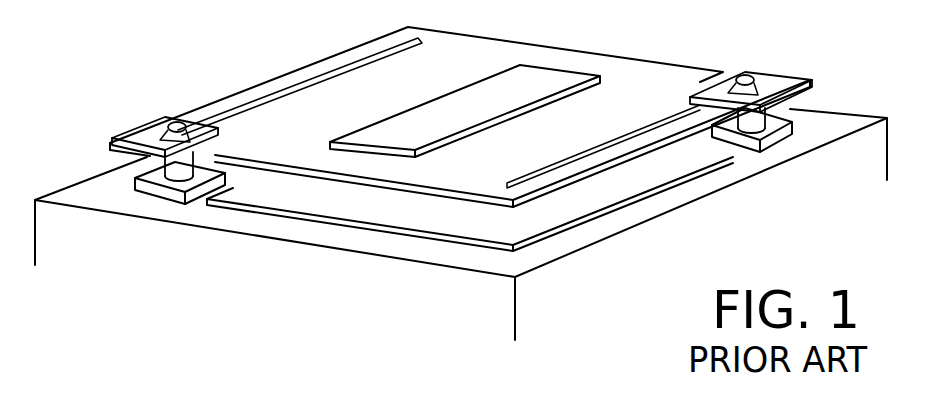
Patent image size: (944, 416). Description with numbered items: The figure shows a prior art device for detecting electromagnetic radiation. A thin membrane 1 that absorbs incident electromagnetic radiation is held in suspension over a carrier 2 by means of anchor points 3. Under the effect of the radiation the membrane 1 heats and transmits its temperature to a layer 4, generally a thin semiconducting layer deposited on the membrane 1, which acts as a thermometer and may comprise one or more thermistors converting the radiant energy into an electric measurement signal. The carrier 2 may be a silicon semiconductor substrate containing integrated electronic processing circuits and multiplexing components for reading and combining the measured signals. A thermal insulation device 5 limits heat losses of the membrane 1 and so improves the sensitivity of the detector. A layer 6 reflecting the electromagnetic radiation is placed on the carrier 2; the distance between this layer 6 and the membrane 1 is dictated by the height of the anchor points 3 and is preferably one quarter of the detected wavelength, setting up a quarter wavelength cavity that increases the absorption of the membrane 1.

The membrane 1 is at (350, 97).
The carrier 2 is at (74, 186).
The anchor points 3 is at (752, 124).
The layer 4 is at (573, 76).
The thermal insulation device 5 is at (246, 97).
The reflecting layer 6 is at (310, 220).